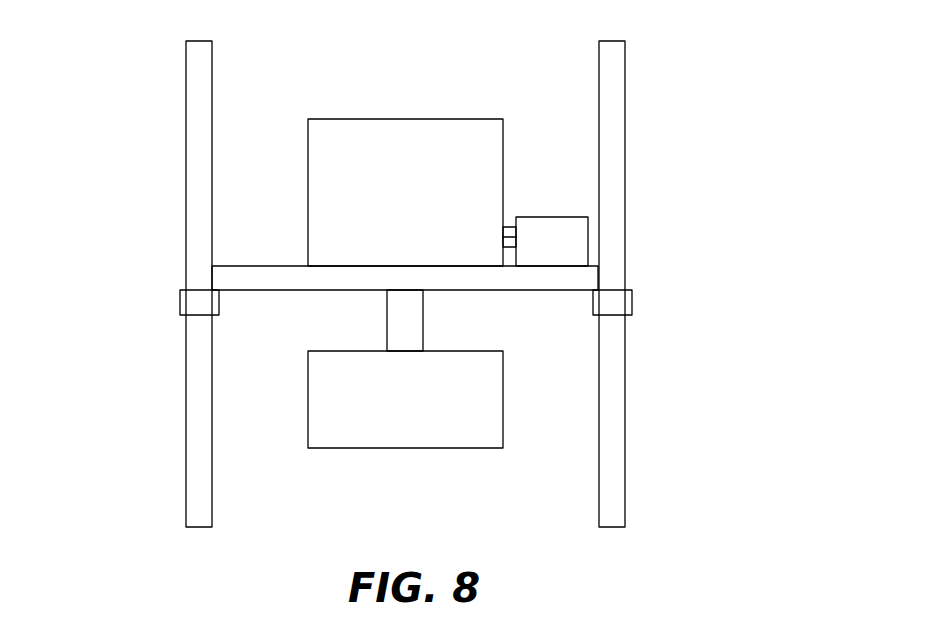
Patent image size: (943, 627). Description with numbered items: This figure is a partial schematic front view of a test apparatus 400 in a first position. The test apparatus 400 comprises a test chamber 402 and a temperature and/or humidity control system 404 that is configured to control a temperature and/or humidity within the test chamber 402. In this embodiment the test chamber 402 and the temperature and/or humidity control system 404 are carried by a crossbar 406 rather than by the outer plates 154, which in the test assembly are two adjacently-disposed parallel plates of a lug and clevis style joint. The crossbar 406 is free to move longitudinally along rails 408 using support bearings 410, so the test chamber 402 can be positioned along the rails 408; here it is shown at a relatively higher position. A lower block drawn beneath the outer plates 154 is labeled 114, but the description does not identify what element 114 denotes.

The test apparatus 400 is at (732, 230).
The test chamber 402 is at (360, 128).
The temperature and/or humidity control system 404 is at (550, 232).
The crossbar 406 is at (255, 277).
The rails 408 is at (200, 196).
The support bearings 410 is at (200, 303).
The outer plates 154 is at (421, 331).
The base unit 114 is at (440, 419).